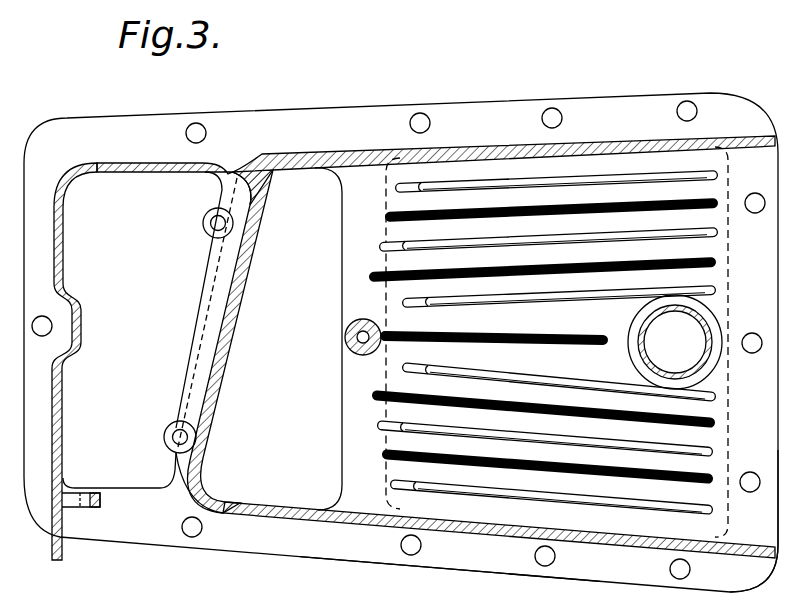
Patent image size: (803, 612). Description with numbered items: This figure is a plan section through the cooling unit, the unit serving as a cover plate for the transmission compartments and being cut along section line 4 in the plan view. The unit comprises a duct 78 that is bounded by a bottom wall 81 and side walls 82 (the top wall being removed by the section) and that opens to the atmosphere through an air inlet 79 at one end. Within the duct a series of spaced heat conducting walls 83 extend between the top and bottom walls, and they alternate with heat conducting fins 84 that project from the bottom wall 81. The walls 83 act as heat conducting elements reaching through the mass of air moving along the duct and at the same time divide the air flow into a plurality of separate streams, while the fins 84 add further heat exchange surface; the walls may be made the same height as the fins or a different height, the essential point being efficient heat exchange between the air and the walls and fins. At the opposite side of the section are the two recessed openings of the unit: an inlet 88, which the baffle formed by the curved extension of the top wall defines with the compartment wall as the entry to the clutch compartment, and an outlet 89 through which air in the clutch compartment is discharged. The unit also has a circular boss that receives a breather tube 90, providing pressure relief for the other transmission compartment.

The cover plate 4 is at (702, 70).
The duct 78 is at (358, 183).
The air inlet 79 is at (770, 530).
The bottom wall 81 is at (448, 556).
The side walls 82 is at (527, 536).
The heat conducting walls 83 is at (706, 200).
The heat conducting fins 84 is at (618, 178).
The inlet 88 is at (293, 383).
The outlet 89 is at (110, 374).
The breather tube 90 is at (703, 332).